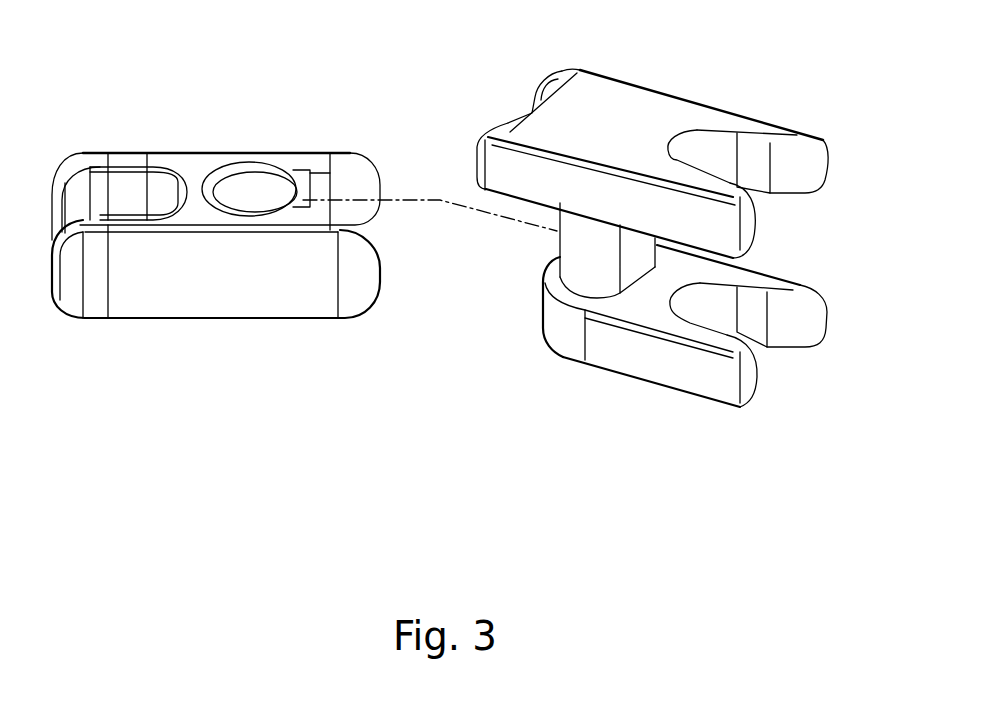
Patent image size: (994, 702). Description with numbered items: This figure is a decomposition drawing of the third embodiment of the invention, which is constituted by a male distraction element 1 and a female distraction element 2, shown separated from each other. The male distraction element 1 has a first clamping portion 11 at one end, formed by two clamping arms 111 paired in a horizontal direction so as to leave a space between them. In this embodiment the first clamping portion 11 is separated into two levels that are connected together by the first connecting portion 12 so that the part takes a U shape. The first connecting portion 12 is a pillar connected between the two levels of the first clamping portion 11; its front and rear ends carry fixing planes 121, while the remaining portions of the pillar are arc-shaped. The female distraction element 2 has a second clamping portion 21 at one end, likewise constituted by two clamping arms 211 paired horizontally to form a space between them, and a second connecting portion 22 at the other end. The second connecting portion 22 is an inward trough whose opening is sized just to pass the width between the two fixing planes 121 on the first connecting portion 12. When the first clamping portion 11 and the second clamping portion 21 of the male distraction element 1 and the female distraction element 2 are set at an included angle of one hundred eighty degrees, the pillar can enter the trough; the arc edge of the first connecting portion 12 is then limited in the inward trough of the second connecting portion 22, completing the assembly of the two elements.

The male distraction element 1 is at (647, 243).
The first clamping portion 11 is at (766, 350).
The clamping arms 111 is at (798, 160).
The first connecting portion 12 is at (555, 336).
The fixing planes 121 is at (635, 270).
The female distraction element 2 is at (216, 242).
The second clamping portion 21 is at (125, 186).
The second connecting portion 22 is at (272, 188).
The clamping arms 211 is at (75, 295).